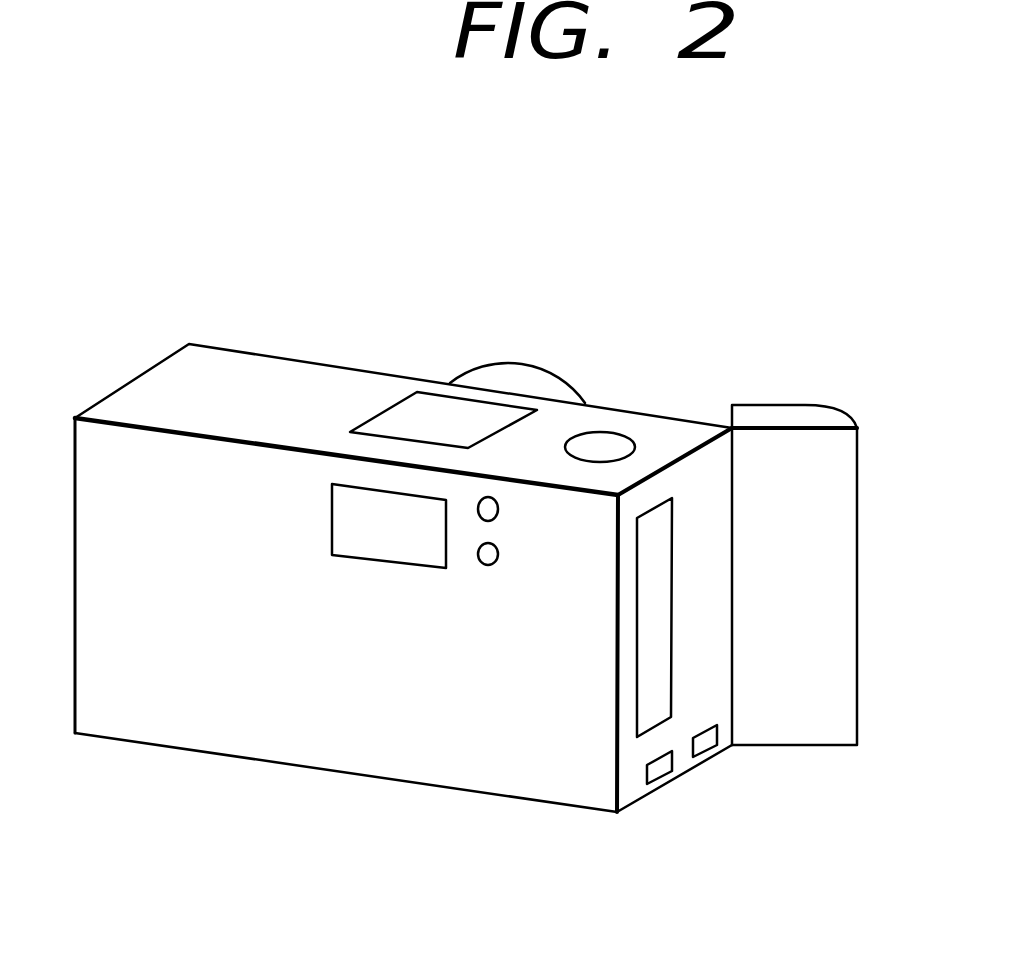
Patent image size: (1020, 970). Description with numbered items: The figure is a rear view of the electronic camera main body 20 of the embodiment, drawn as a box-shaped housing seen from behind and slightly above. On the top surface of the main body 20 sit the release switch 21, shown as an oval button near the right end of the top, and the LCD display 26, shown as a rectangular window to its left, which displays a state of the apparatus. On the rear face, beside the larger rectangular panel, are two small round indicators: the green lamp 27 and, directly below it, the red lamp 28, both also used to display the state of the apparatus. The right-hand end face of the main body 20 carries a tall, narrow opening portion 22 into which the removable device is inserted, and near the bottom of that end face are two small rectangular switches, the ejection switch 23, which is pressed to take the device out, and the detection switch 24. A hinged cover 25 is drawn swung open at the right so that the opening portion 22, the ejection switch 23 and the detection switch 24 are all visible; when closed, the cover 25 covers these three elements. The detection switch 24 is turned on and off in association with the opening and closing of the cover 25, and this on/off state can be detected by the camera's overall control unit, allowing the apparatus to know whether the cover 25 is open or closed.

The electronic camera main body 20 is at (303, 373).
The release switch 21 is at (605, 433).
The opening portion 22 is at (672, 498).
The ejection switch 23 is at (660, 772).
The detection switch 24 is at (707, 743).
The cover 25 is at (800, 426).
The LCD display 26 is at (403, 427).
The green lamp 27 is at (483, 498).
The red lamp 28 is at (483, 565).